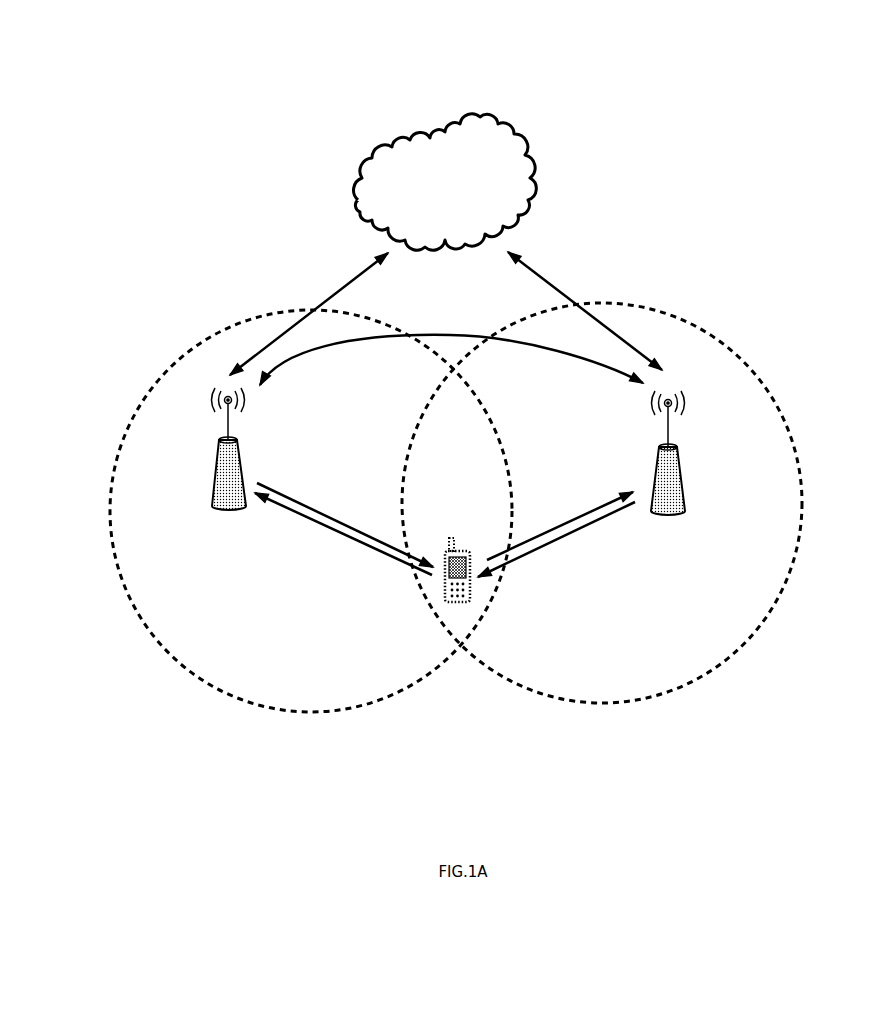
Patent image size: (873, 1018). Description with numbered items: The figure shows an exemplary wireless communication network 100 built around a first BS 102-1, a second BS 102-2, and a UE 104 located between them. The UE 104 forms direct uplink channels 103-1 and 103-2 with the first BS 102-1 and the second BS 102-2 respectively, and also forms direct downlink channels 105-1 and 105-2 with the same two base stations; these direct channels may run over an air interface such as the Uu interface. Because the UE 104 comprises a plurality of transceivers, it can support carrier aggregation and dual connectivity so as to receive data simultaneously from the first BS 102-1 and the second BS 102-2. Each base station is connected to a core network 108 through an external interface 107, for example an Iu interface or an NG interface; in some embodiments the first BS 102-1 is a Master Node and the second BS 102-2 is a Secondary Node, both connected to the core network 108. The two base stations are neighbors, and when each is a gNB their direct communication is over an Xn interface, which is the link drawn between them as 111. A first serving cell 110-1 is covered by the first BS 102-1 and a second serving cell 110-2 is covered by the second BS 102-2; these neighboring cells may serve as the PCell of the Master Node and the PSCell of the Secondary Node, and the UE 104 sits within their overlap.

The wireless communication network 100 is at (95, 97).
The first BS 102-1 is at (250, 436).
The second BS 102-2 is at (683, 438).
The uplink channel 103-1 is at (352, 540).
The uplink channel 103-2 is at (543, 545).
The UE 104 is at (458, 545).
The downlink channel 105-1 is at (316, 510).
The downlink channel 105-2 is at (600, 508).
The external interface 107 is at (325, 300).
The core network 108 is at (385, 172).
The first serving cell 110-1 is at (252, 704).
The second serving cell 110-2 is at (572, 705).
The inter-base-station link 111 is at (477, 332).